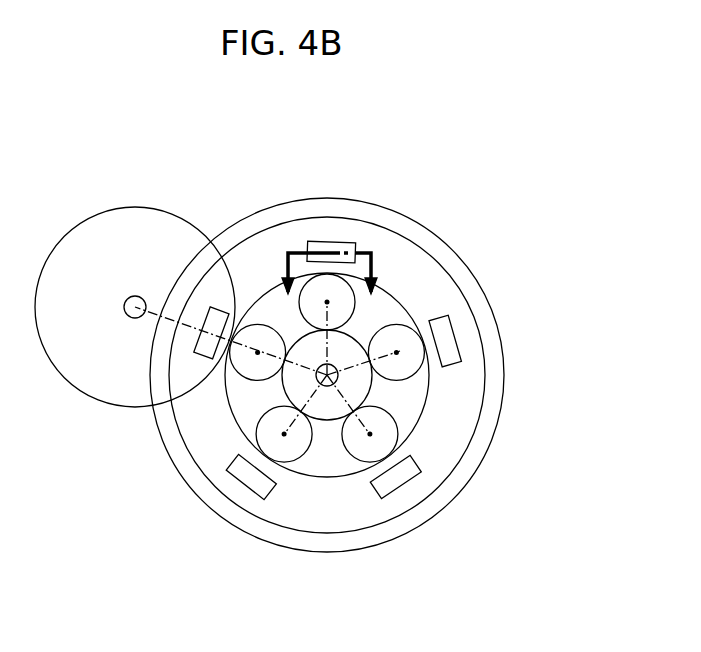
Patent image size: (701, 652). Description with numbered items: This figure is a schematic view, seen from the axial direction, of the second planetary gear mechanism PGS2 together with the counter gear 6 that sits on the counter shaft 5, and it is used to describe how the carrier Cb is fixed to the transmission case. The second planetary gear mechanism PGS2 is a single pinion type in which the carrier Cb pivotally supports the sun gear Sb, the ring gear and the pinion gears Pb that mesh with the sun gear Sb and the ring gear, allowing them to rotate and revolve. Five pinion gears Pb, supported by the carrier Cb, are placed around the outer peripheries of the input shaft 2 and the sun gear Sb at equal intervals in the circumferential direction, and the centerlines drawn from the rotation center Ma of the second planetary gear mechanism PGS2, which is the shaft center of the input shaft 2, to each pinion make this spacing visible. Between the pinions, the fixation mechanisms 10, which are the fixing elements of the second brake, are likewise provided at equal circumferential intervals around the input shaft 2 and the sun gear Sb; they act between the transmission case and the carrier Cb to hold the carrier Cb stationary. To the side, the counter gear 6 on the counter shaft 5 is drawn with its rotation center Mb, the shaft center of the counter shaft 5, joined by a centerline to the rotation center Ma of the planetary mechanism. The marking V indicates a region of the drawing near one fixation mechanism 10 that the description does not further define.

The second planetary gear mechanism PGS2 is at (500, 284).
The carrier Cb is at (384, 292).
The input shaft 2 is at (229, 416).
The rotation center of the second planetary gear mechanism Ma is at (418, 423).
The sun gear Sb is at (321, 426).
The pinion gears Pb is at (233, 339).
The fixation mechanisms 10 is at (329, 250).
The voltage V is at (329, 265).
The counter gear 6 is at (128, 206).
The counter shaft 5 is at (124, 312).
The rotation center of the counter gear Mb is at (136, 296).